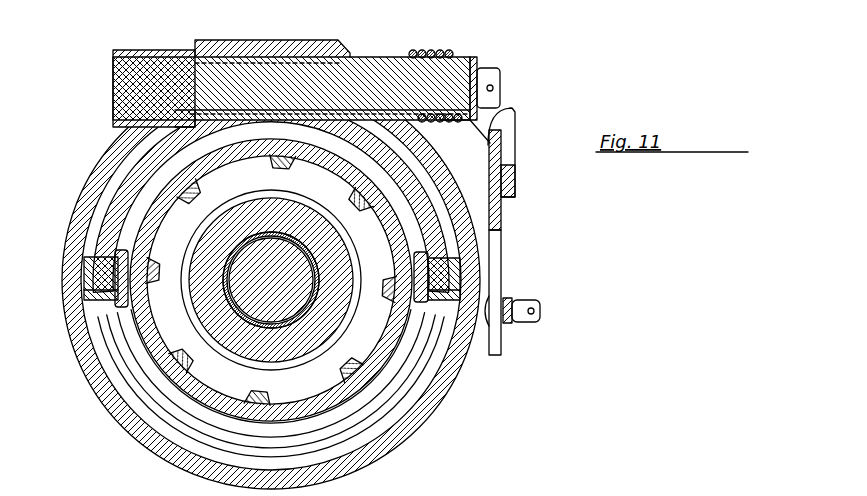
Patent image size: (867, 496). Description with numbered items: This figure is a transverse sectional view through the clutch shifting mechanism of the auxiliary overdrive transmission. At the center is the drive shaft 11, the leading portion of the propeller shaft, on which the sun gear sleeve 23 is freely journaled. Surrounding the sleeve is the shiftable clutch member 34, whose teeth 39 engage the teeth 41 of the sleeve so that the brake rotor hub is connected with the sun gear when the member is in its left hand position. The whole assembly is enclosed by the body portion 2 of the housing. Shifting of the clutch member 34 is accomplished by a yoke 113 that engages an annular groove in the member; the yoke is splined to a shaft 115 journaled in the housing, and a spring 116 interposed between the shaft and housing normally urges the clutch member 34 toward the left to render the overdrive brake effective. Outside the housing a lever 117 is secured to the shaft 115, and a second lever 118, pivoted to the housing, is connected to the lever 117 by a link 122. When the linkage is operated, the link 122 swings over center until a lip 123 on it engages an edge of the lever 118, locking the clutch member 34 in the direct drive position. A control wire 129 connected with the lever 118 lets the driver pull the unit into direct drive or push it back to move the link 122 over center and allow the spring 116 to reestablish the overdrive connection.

The body portion 2 is at (98, 168).
The drive shaft 11 is at (312, 261).
The sun gear sleeve 23 is at (226, 280).
The clutch member 34 is at (352, 170).
The teeth 39 is at (194, 203).
The teeth 41 is at (271, 280).
The yoke 113 is at (105, 222).
The shaft 115 is at (374, 76).
The spring 116 is at (436, 52).
The lever 117 is at (500, 222).
The second lever 118 is at (500, 263).
The link 122 is at (512, 183).
The lip 123 is at (508, 128).
The control wire 129 is at (517, 322).